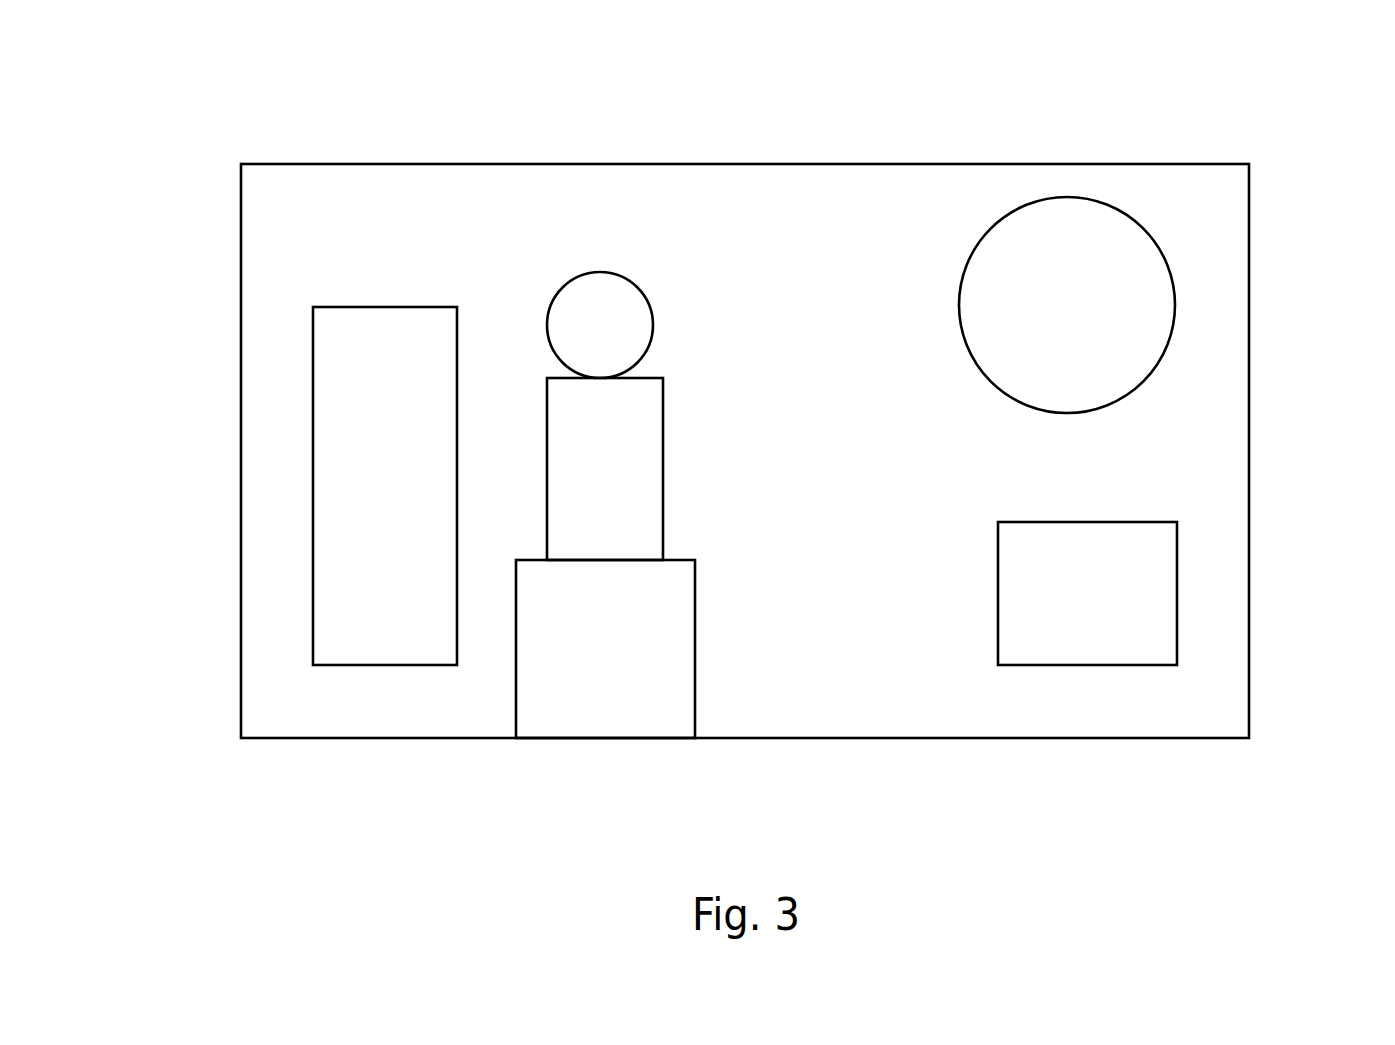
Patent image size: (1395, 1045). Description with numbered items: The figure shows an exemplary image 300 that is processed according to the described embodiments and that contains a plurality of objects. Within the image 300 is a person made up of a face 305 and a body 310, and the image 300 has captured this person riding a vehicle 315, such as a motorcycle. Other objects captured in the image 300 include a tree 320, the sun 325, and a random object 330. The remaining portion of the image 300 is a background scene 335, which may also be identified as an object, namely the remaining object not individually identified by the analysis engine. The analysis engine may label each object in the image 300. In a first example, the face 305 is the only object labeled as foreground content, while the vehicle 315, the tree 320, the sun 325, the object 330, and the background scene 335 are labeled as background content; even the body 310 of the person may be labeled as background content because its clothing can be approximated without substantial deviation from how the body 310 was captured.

The image 300 is at (1345, 48).
The face 305 is at (600, 272).
The body 310 is at (663, 462).
The vehicle 315 is at (606, 690).
The tree 320 is at (312, 362).
The sun 325 is at (1176, 307).
The random object 330 is at (1178, 594).
The background scene 335 is at (818, 690).